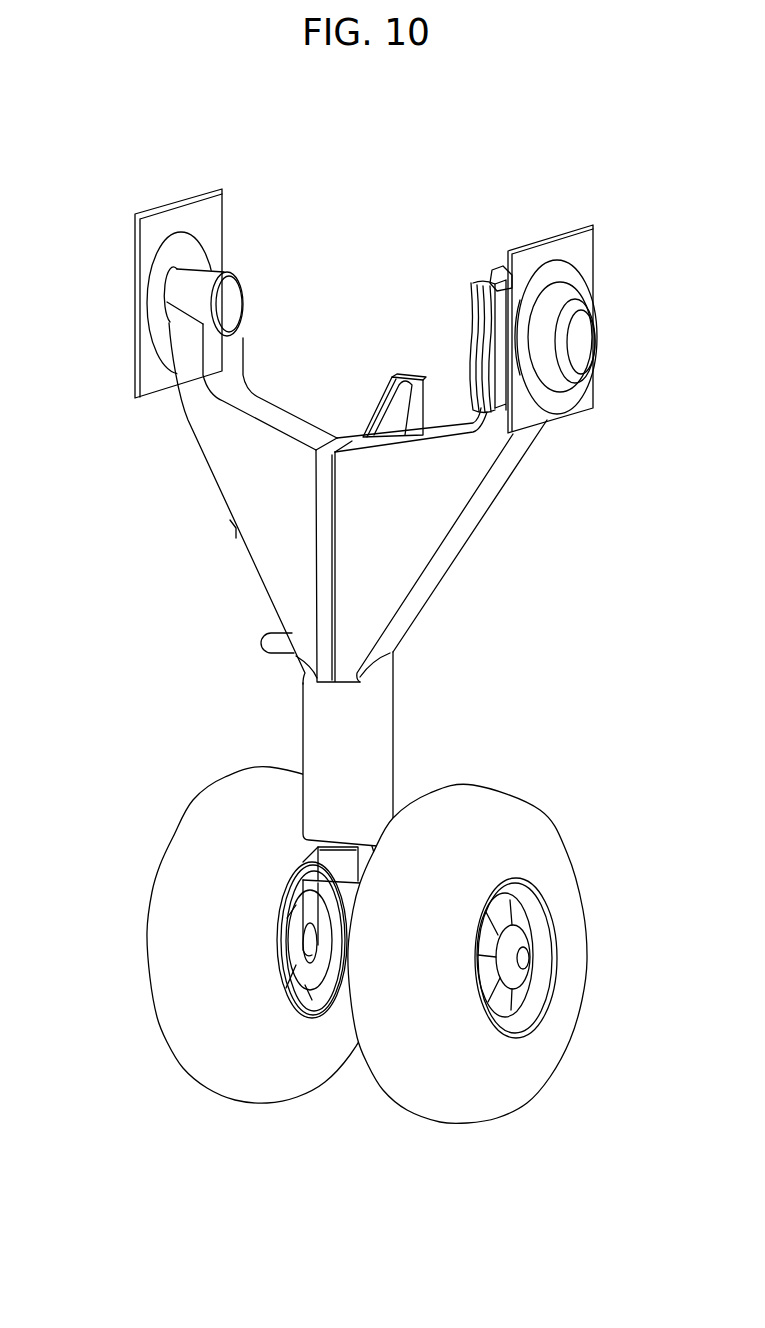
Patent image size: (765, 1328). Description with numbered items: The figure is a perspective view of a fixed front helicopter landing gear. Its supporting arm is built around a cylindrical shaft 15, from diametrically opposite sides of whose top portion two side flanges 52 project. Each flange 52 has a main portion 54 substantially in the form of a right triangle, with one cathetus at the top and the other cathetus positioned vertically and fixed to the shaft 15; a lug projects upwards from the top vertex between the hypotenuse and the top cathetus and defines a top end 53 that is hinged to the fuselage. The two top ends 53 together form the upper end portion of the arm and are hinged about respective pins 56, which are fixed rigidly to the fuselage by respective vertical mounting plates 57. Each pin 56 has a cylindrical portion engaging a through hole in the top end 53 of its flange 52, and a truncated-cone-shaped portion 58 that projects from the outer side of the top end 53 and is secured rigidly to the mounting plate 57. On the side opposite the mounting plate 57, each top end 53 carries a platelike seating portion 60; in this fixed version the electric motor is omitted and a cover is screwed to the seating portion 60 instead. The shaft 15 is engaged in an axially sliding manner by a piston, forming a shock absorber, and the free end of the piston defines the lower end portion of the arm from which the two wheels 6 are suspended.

The wheel 6 is at (160, 1018).
The shaft 15 is at (315, 732).
The side flange 52 is at (240, 488).
The top end 53 is at (220, 359).
The main portion 54 is at (258, 550).
The pin 56 is at (252, 303).
The mounting plate 57 is at (207, 220).
The truncated-cone-shaped portion 58 is at (553, 392).
The seating portion 60 is at (497, 276).